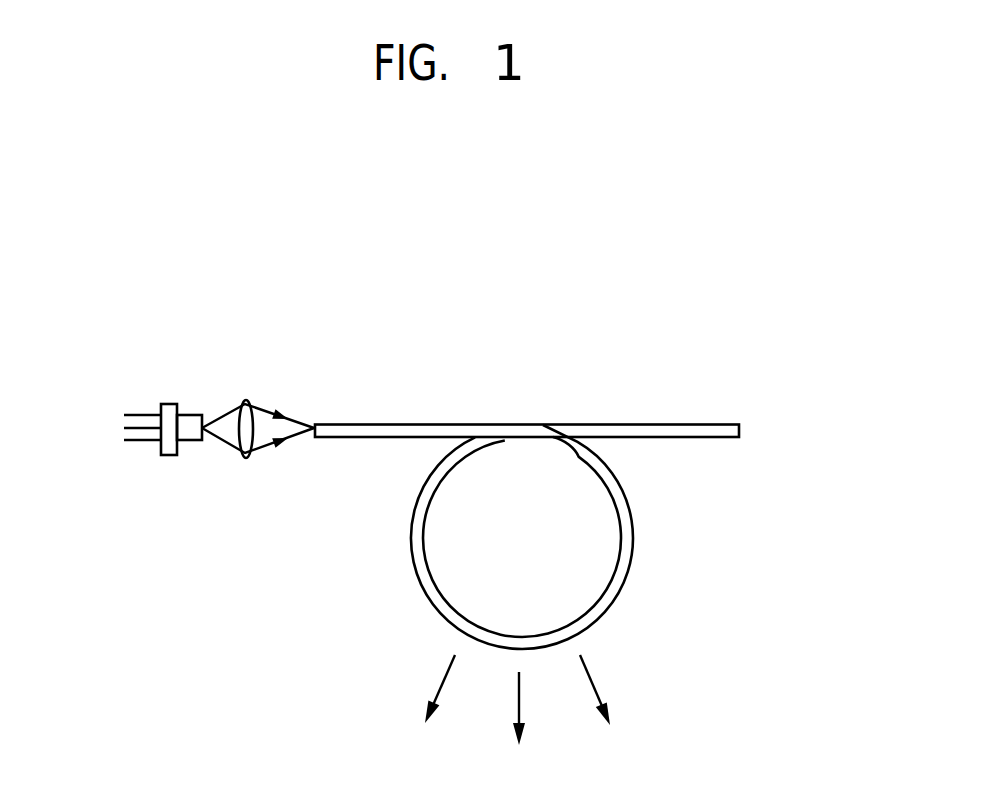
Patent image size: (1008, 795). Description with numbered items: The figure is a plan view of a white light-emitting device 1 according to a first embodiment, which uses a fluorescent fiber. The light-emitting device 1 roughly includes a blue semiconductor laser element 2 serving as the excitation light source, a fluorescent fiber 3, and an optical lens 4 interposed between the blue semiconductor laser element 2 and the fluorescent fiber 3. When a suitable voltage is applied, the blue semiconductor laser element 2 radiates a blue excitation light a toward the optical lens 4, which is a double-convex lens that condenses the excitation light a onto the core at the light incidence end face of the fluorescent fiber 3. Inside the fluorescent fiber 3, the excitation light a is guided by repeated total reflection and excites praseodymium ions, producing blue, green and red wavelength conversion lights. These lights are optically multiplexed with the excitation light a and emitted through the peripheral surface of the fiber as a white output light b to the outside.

The light-emitting device 1 is at (590, 310).
The blue semiconductor laser element 2 is at (170, 404).
The fluorescent fiber 3 is at (631, 571).
The optical lens 4 is at (247, 459).
The excitation light a is at (226, 442).
The output light b is at (597, 687).